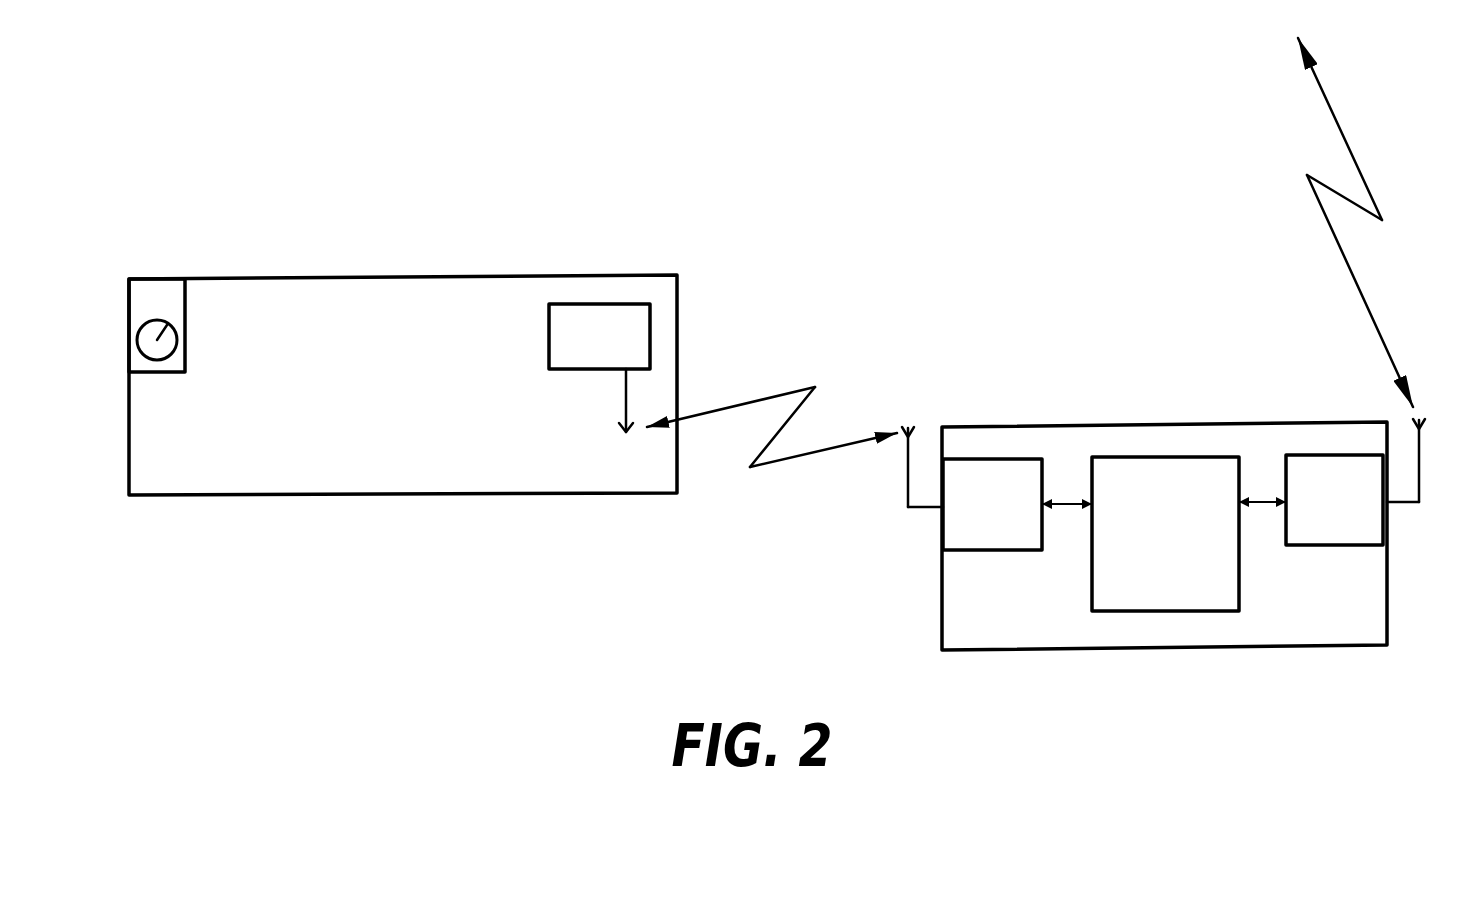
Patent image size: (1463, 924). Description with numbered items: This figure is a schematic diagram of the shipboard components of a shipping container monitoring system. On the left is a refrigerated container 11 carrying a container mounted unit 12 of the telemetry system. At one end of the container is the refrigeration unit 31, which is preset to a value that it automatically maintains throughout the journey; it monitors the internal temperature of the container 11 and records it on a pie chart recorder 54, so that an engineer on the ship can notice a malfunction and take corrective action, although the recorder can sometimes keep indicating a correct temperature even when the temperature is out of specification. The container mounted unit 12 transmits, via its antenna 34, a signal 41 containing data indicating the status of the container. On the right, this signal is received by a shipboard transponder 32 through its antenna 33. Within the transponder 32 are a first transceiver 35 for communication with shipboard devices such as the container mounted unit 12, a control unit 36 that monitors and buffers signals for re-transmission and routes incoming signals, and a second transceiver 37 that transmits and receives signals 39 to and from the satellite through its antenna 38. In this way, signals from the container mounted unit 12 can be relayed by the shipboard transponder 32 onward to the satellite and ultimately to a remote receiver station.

The container 11 is at (395, 277).
The container mounted unit 12 is at (625, 303).
The refrigeration unit 31 is at (155, 293).
The shipboard transponder 32 is at (1107, 427).
The antenna 33 is at (908, 470).
The antenna 34 is at (630, 397).
The first transceiver 35 is at (950, 528).
The control unit 36 is at (1147, 612).
The second transceiver 37 is at (1342, 537).
The antenna 38 is at (1423, 470).
The signals 39 is at (1325, 220).
The signal 41 is at (780, 390).
The pie chart recorder 54 is at (178, 347).